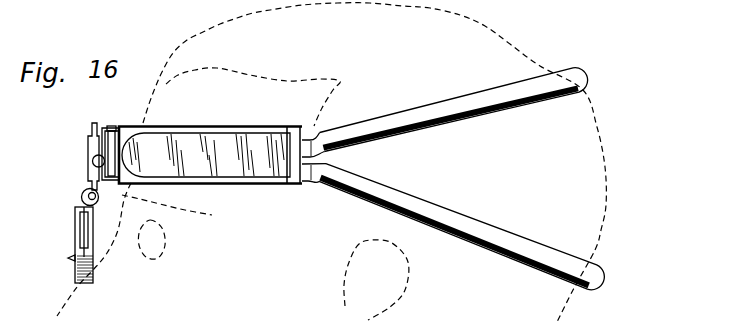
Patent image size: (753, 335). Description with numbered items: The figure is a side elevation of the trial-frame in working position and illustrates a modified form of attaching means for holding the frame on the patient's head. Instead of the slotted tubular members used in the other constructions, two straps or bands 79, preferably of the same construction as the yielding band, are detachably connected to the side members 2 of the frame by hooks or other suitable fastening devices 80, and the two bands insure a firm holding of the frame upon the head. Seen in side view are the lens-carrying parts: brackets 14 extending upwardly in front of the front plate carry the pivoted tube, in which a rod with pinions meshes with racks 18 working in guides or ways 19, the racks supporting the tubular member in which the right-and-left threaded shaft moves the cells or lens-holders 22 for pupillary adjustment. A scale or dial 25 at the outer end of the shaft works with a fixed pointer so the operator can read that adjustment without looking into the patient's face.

The side members 2 is at (210, 155).
The brackets 14 is at (112, 126).
The racks 18 is at (92, 127).
The guides or ways 19 is at (92, 162).
The cells or lens-holders 22 is at (93, 277).
The scale or dial 25 is at (81, 197).
The straps or bands 79 is at (528, 246).
The hooks or fastening devices 80 is at (316, 131).